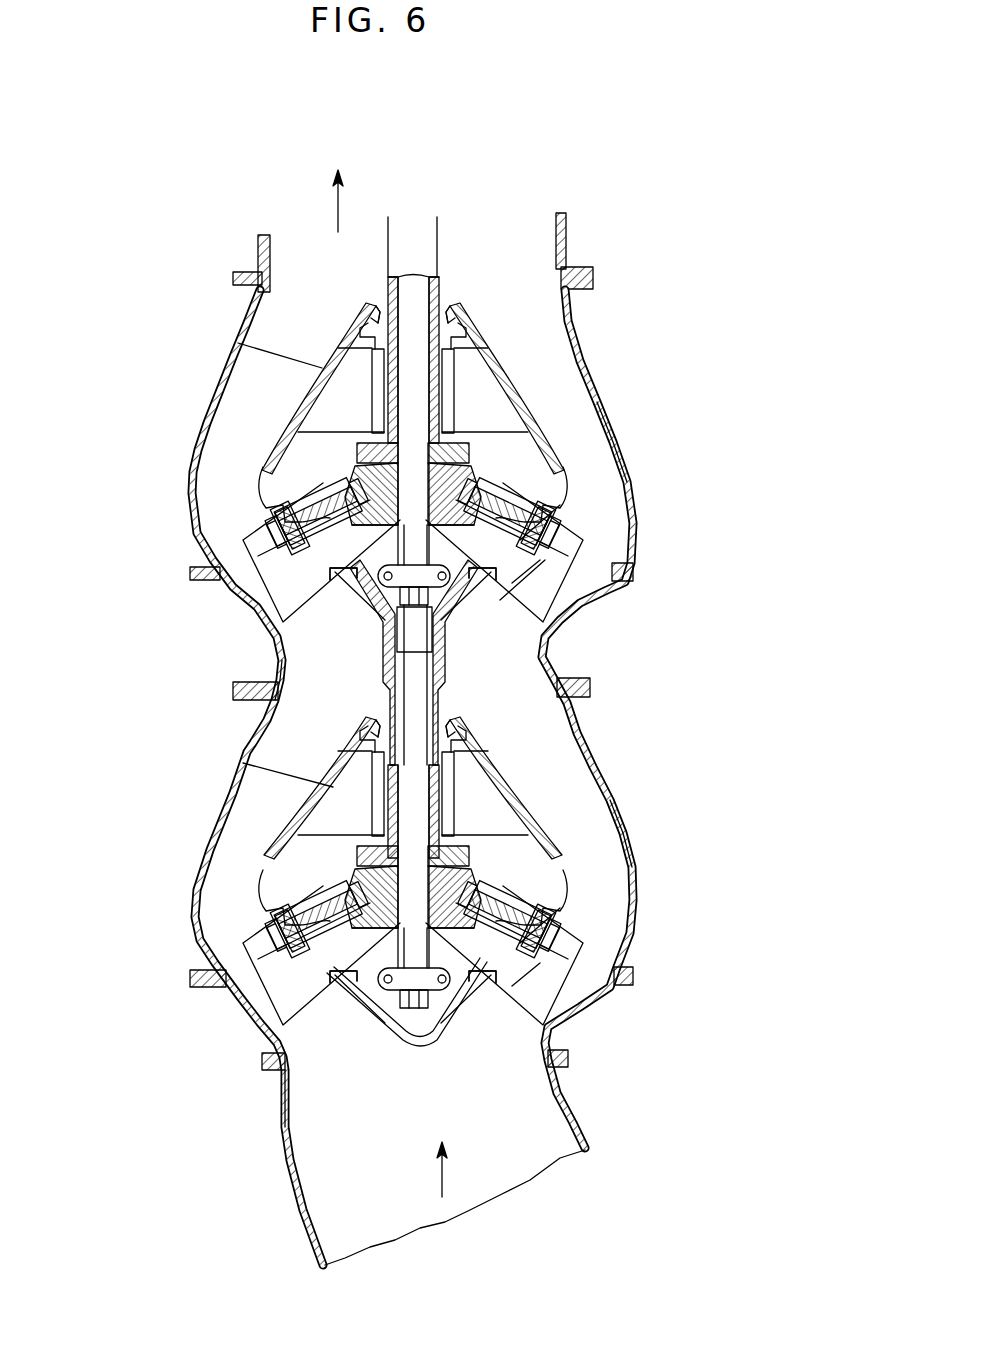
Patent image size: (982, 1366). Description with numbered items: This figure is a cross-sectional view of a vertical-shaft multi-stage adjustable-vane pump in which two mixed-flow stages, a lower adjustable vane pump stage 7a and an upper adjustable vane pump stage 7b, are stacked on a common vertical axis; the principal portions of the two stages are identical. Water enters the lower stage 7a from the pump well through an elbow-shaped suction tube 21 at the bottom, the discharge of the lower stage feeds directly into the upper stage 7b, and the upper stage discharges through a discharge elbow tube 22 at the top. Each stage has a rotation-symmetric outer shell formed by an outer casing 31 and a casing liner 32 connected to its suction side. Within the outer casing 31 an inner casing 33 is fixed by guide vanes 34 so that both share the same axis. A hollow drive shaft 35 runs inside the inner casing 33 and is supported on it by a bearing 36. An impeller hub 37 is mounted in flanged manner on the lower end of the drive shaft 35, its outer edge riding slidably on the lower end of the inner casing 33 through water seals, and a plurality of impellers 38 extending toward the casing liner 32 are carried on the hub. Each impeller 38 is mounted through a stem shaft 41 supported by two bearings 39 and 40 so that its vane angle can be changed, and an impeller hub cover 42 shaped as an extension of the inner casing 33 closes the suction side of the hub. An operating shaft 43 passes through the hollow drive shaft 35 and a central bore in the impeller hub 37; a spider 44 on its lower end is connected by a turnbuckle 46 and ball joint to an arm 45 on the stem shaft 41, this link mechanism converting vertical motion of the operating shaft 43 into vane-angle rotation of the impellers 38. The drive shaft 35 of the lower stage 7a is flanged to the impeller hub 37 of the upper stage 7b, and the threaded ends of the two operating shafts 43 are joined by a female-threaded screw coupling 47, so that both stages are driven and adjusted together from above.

The suction tube 21 is at (280, 1133).
The discharge elbow tube 22 is at (568, 220).
The outer casing 31 is at (190, 500).
The casing liner 32 is at (273, 640).
The inner casing 33 is at (530, 410).
The guide vanes 34 is at (227, 403).
The drive shaft 35 is at (443, 397).
The bearing 36 is at (462, 315).
The impeller hub 37 is at (310, 500).
The impellers 38 is at (263, 595).
The bearing 39 is at (290, 537).
The bearing 40 is at (287, 493).
The stem shaft 41 is at (540, 560).
The impeller hub cover 42 is at (398, 1043).
The operating shaft 43 is at (463, 473).
The spider 44 is at (442, 587).
The arm 45 is at (570, 503).
The turnbuckle 46 is at (340, 582).
The screw coupling 47 is at (448, 648).
The lower-stage adjustable-vane pump stage 7a is at (630, 835).
The upper-stage adjustable-vane pump stage 7b is at (636, 446).